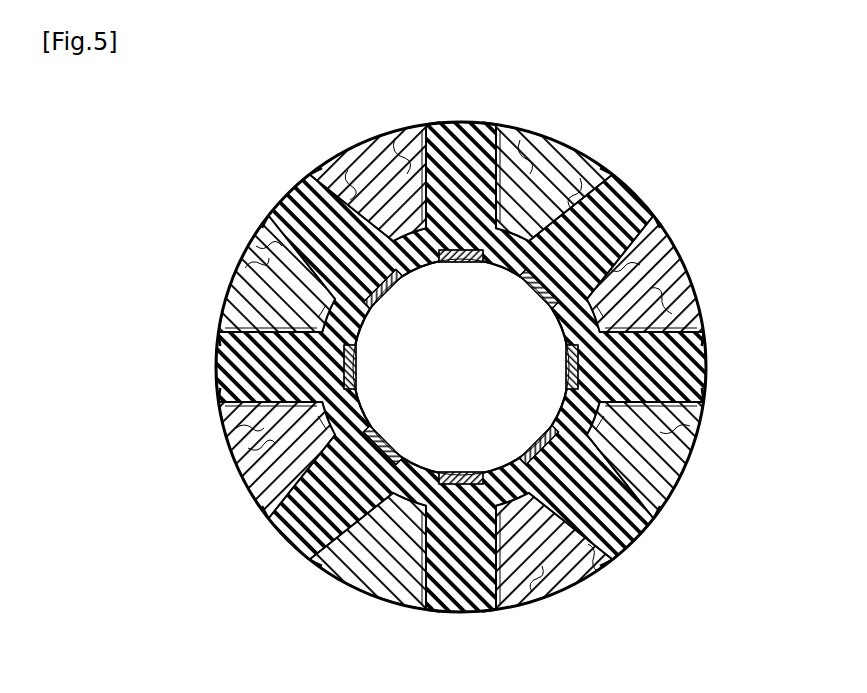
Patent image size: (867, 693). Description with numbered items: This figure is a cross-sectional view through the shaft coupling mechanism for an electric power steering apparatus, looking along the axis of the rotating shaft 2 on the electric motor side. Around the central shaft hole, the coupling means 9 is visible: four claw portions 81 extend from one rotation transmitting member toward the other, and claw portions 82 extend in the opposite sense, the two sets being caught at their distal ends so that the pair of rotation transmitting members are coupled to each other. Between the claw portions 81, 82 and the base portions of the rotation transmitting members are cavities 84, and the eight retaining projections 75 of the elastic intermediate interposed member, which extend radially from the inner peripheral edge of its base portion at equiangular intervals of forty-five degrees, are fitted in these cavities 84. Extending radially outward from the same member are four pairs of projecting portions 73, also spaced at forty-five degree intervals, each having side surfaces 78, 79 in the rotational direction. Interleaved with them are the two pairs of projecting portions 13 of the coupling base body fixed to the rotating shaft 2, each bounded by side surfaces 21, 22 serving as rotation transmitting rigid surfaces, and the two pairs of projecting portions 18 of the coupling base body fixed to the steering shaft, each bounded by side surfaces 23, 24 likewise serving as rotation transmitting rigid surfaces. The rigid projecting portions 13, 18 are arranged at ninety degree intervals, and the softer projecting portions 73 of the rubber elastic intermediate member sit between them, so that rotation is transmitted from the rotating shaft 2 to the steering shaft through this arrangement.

The rotating shaft 2 is at (449, 381).
The coupling means 9 is at (483, 273).
The projecting portions 13 is at (385, 162).
The projecting portions 18 is at (542, 162).
The side surface 21 is at (432, 124).
The side surface 22 is at (657, 220).
The side surface 23 is at (612, 188).
The side surface 24 is at (492, 124).
The projecting portions 73 is at (458, 158).
The retaining projections 75 is at (350, 170).
The side surface 78 is at (396, 138).
The side surface 79 is at (520, 140).
The claw portions 81 is at (460, 263).
The claw portions 82 is at (392, 292).
The cavities 84 is at (256, 246).